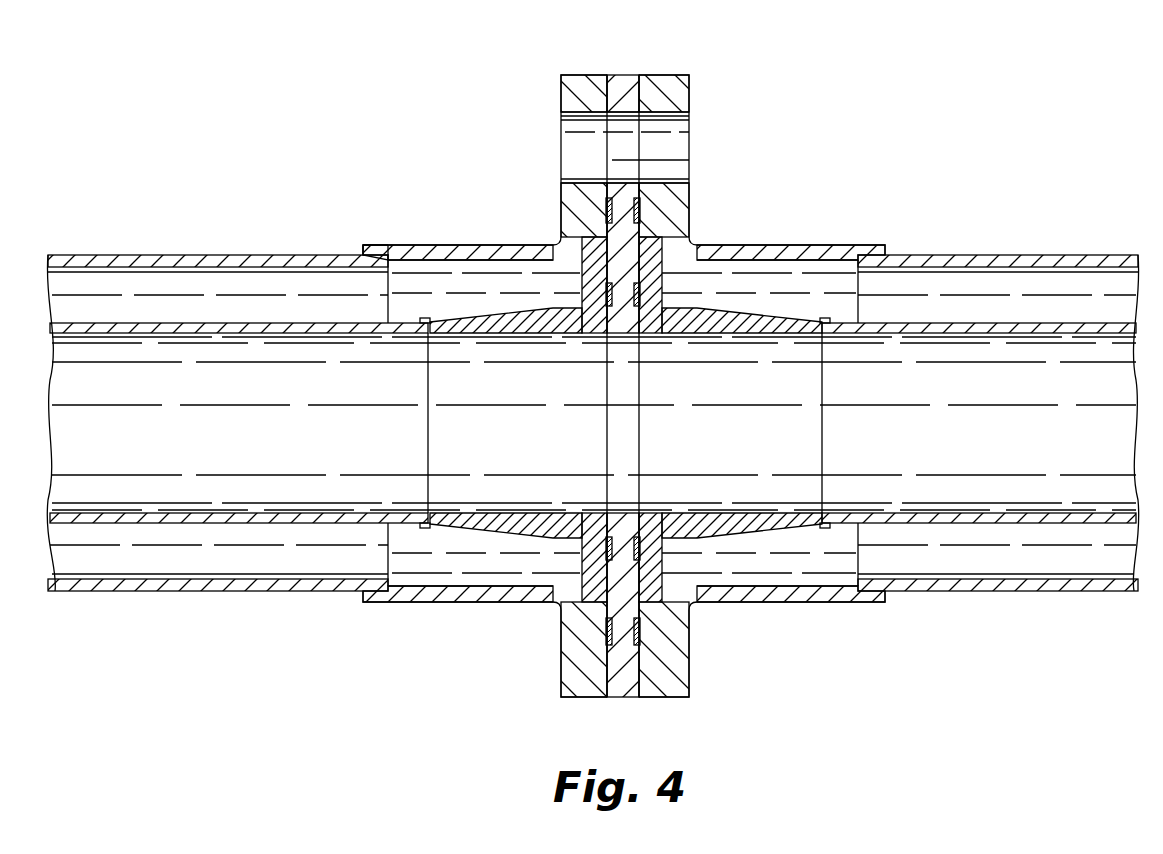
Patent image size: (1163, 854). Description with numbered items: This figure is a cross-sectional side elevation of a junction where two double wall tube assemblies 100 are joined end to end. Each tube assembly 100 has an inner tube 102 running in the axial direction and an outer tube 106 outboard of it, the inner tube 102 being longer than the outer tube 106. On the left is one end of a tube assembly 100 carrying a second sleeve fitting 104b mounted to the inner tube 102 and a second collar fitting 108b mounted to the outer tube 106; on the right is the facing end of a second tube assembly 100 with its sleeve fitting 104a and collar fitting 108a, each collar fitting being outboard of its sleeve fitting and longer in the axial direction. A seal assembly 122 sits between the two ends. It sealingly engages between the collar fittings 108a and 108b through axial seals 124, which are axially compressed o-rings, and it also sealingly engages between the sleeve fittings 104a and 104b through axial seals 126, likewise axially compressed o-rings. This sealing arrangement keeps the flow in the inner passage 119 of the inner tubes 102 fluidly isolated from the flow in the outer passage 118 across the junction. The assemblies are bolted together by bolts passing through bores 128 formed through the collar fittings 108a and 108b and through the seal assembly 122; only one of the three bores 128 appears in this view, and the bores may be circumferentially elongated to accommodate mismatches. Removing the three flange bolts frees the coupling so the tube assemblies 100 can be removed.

The double wall tube assembly 100 is at (243, 97).
The inner tube 102 is at (152, 524).
The sleeve fitting 104a is at (760, 320).
The second sleeve fitting 104b is at (483, 320).
The outer tube 106 is at (107, 255).
The collar fitting 108a is at (691, 99).
The second collar fitting 108b is at (556, 101).
The outer passage 118 is at (210, 300).
The inner passage 119 is at (246, 478).
The seal assembly 122 is at (618, 75).
The axial seals 124 is at (604, 207).
The axial seals 126 is at (606, 308).
The bores 128 is at (580, 158).